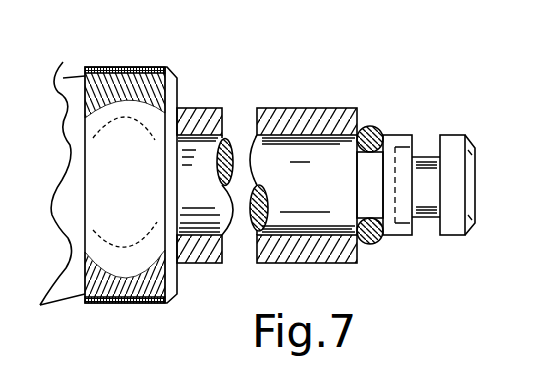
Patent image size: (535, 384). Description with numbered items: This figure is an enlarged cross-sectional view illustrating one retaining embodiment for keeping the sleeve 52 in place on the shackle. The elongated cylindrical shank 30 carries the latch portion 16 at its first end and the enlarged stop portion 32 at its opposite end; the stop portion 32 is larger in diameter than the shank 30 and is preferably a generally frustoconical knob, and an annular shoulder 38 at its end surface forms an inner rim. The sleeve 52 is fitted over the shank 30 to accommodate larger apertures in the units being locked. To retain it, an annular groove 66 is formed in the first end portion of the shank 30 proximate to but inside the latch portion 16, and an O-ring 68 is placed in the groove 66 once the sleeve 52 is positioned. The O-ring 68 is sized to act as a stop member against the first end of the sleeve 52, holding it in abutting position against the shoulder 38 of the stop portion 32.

The stop portion 32 is at (125, 92).
The annular shoulder 38 is at (177, 90).
The sleeve 52 is at (308, 105).
The shank 30 is at (313, 220).
The O-ring 68 is at (368, 130).
The annular groove 66 is at (382, 188).
The latch portion 16 is at (450, 160).